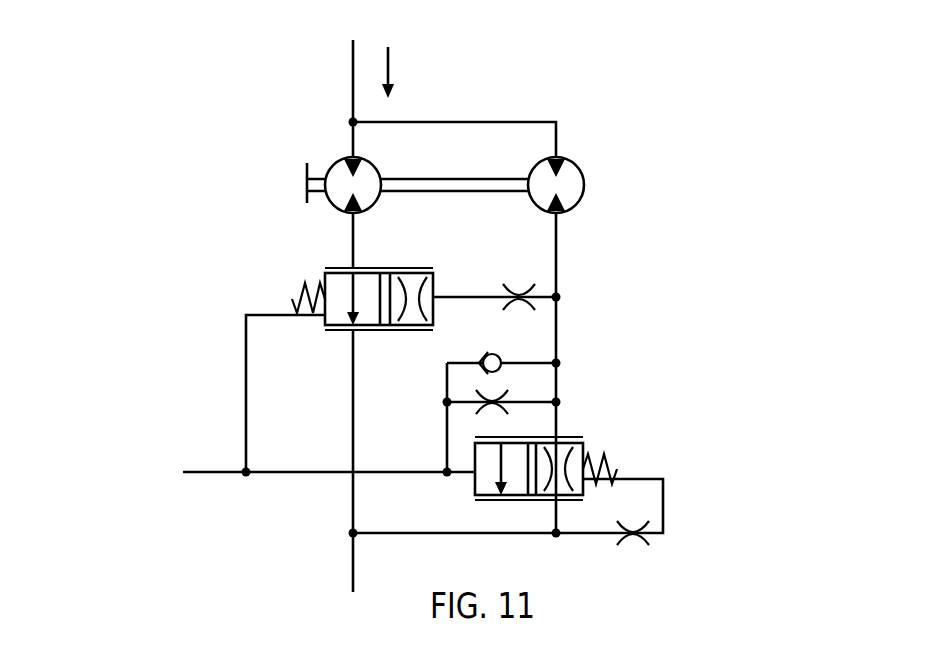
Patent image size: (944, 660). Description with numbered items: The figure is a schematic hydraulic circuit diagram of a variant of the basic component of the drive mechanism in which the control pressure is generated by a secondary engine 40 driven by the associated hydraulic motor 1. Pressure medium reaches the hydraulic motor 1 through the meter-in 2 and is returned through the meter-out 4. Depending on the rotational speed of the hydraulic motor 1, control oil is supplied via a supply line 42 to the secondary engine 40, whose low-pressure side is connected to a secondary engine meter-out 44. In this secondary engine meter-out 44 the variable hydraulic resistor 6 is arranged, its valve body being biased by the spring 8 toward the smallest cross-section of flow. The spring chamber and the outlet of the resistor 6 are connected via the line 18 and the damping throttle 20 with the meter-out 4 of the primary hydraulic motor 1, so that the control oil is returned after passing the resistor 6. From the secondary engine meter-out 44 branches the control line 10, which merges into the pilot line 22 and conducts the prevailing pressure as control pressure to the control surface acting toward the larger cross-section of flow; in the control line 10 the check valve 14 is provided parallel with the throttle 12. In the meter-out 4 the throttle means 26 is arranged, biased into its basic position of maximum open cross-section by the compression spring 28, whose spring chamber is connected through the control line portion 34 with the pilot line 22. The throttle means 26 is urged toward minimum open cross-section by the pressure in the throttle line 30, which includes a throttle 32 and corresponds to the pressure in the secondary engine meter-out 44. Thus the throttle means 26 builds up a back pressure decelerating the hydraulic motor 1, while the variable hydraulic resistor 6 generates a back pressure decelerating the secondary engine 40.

The hydraulic motor 1 is at (349, 193).
The meter-in 2 is at (353, 90).
The meter-out 4 is at (353, 412).
The variable hydraulic resistor 6 is at (595, 412).
The spring 8 is at (612, 457).
The control line 10 is at (447, 440).
The throttle 12 is at (490, 389).
The check valve 14 is at (484, 350).
The line 18 is at (663, 507).
The damping throttle 20 is at (636, 544).
The pilot line 22 is at (222, 475).
The throttle means 26 is at (334, 252).
The compression spring 28 is at (292, 293).
The throttle line 30 is at (465, 295).
The throttle 32 is at (518, 286).
The control line portion 34 is at (246, 370).
The secondary engine 40 is at (565, 180).
The supply line 42 is at (489, 119).
The secondary engine meter-out 44 is at (577, 230).